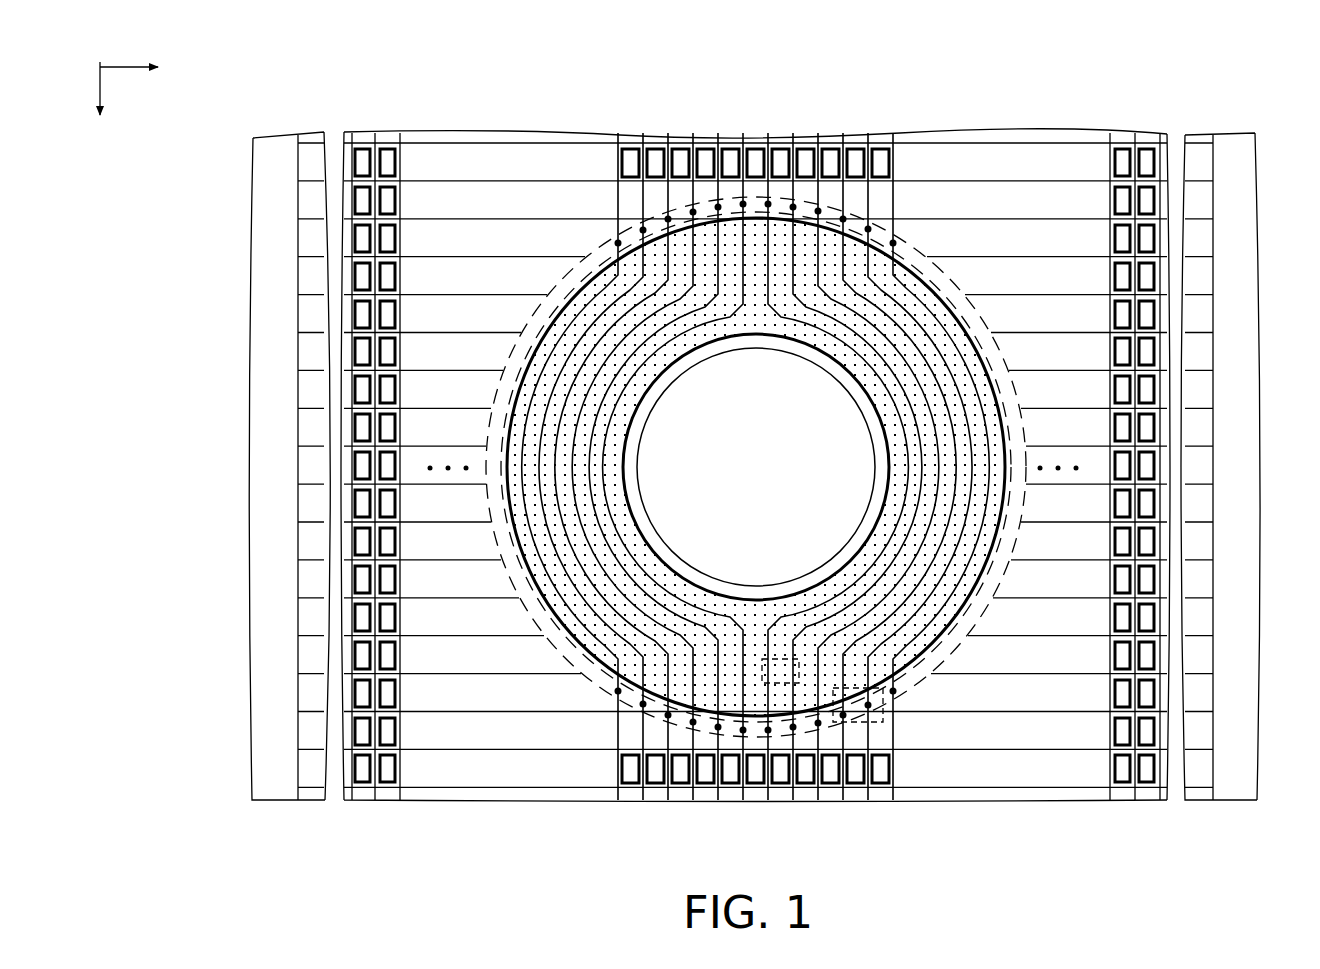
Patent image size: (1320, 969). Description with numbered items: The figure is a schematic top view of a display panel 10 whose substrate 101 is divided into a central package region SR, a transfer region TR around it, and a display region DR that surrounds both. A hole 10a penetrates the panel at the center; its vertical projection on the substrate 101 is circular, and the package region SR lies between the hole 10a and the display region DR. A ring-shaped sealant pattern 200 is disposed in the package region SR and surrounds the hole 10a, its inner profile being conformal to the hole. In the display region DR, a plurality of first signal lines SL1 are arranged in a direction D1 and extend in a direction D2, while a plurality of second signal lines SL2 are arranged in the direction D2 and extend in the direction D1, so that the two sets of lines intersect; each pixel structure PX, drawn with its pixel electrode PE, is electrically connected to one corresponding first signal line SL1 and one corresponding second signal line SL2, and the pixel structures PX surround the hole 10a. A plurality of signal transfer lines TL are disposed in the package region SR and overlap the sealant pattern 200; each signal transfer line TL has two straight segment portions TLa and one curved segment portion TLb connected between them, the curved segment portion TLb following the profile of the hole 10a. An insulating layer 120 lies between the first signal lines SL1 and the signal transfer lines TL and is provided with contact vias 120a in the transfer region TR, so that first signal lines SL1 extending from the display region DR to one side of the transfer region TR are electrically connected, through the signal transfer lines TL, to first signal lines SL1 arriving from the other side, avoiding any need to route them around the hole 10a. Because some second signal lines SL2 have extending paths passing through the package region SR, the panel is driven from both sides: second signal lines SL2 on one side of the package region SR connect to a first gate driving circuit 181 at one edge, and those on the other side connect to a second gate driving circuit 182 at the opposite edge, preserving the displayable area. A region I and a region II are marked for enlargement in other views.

The display panel 10 is at (1312, 860).
The substrate 101 is at (585, 134).
The first gate driving circuit 181 is at (275, 153).
The second gate driving circuit 182 is at (1236, 152).
The pixel electrode PE is at (744, 411).
The pixel structure PX is at (365, 158).
The first signal line SL1 is at (402, 136).
The second signal line SL2 is at (502, 158).
The signal transfer line TL is at (756, 419).
The straight segment portion TLa is at (738, 660).
The curved segment portion TLb is at (690, 663).
The insulating layer 120 is at (744, 190).
The contact via 120a is at (747, 450).
The transfer region TR is at (920, 249).
The display region DR is at (1082, 160).
The sealant pattern 200 is at (650, 387).
The package region SR is at (756, 467).
The hole 10a is at (847, 537).
The region I is at (852, 722).
The region II is at (779, 659).
The direction D1 is at (150, 66).
The direction D2 is at (104, 109).